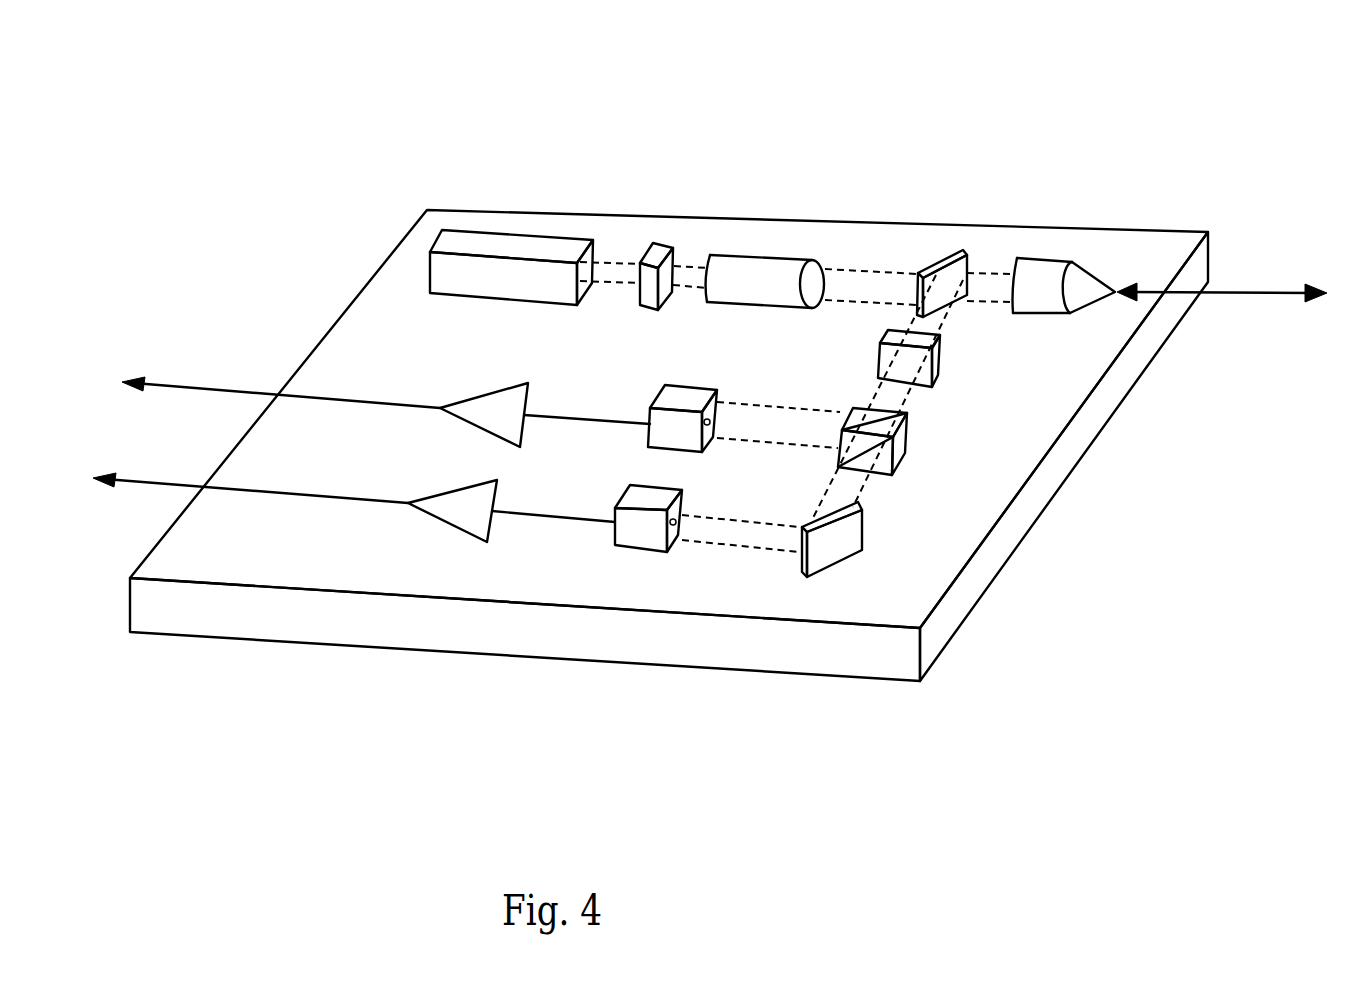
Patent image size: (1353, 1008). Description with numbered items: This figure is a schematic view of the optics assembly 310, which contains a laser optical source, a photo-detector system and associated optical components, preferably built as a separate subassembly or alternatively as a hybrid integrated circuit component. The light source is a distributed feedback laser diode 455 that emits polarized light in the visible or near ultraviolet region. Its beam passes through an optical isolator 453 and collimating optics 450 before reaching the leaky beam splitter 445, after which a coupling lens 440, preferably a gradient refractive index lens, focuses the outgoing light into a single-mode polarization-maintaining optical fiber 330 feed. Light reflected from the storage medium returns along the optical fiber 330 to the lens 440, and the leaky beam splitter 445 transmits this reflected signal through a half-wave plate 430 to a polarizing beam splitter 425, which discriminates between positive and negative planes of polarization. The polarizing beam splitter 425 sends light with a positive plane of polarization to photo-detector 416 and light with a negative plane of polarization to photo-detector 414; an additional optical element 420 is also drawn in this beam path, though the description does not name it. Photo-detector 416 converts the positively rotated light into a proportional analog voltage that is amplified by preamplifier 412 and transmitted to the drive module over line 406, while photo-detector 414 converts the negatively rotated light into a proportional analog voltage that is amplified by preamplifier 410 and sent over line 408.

The optics assembly 310 is at (300, 114).
The optical fiber 330 is at (1225, 297).
The line 406 is at (233, 395).
The line 408 is at (173, 483).
The preamplifier 410 is at (440, 523).
The preamplifier 412 is at (482, 393).
The photo-detector 414 is at (630, 548).
The photo-detector 416 is at (653, 393).
The mirror 420 is at (862, 533).
The polarizing beam splitter 425 is at (903, 440).
The half-wave plate 430 is at (940, 360).
The coupling lens 440 is at (1057, 258).
The leaky beam splitter 445 is at (955, 250).
The collimating optics 450 is at (782, 257).
The optical isolator 453 is at (662, 245).
The laser diode 455 is at (543, 233).